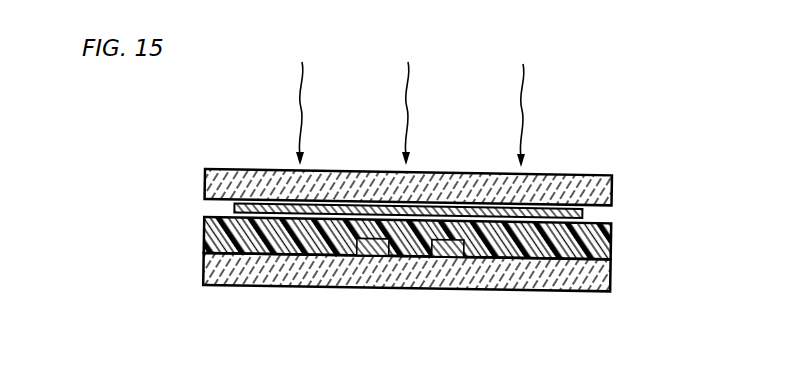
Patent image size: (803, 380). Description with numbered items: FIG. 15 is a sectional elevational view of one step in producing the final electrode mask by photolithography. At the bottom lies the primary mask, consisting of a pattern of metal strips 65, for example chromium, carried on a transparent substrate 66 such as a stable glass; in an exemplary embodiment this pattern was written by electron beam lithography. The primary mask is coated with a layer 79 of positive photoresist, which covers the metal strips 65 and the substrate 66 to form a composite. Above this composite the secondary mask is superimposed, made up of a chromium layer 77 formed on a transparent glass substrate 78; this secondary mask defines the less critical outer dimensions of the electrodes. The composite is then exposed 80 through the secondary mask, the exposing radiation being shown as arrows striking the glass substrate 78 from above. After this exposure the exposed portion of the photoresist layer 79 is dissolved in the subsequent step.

The exposure 80 is at (404, 75).
The transparent glass substrate 78 is at (553, 177).
The chromium layer 77 is at (585, 210).
The layer of positive photoresist 79 is at (612, 230).
The transparent substrate 66 is at (213, 266).
The metal strips 65 is at (451, 246).